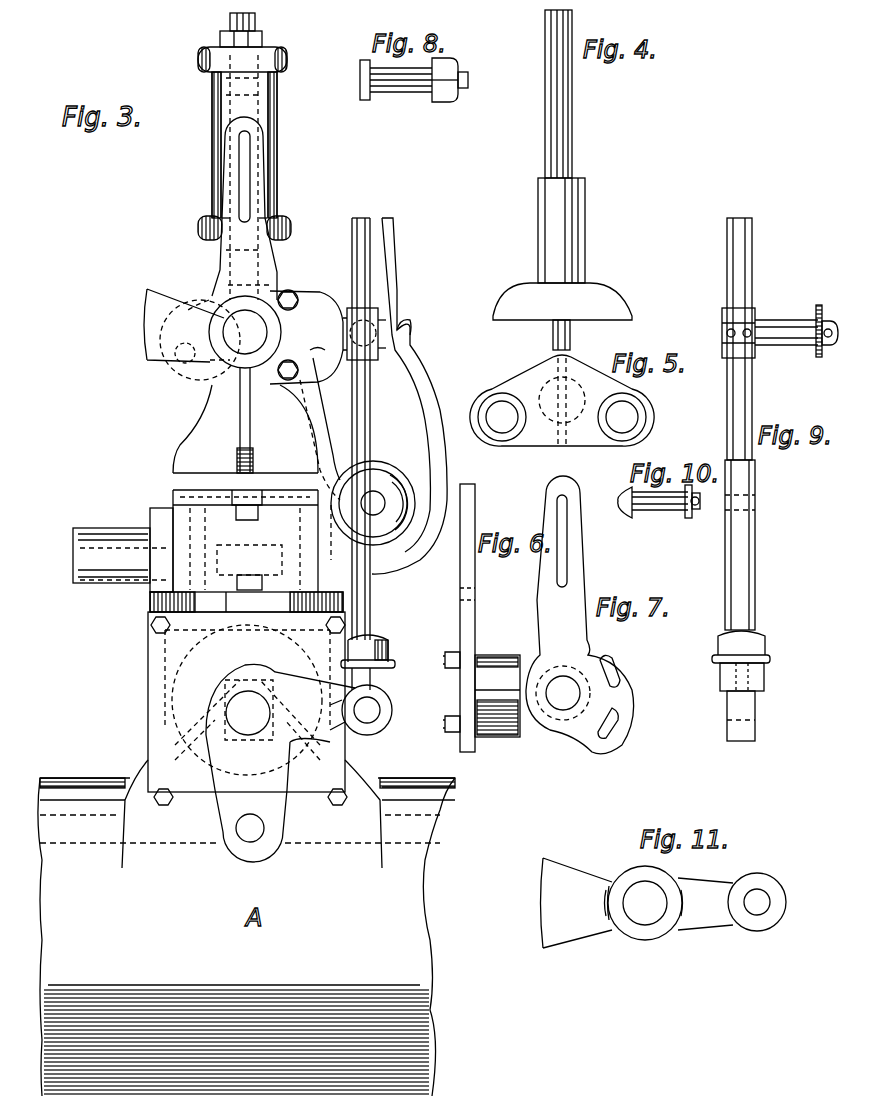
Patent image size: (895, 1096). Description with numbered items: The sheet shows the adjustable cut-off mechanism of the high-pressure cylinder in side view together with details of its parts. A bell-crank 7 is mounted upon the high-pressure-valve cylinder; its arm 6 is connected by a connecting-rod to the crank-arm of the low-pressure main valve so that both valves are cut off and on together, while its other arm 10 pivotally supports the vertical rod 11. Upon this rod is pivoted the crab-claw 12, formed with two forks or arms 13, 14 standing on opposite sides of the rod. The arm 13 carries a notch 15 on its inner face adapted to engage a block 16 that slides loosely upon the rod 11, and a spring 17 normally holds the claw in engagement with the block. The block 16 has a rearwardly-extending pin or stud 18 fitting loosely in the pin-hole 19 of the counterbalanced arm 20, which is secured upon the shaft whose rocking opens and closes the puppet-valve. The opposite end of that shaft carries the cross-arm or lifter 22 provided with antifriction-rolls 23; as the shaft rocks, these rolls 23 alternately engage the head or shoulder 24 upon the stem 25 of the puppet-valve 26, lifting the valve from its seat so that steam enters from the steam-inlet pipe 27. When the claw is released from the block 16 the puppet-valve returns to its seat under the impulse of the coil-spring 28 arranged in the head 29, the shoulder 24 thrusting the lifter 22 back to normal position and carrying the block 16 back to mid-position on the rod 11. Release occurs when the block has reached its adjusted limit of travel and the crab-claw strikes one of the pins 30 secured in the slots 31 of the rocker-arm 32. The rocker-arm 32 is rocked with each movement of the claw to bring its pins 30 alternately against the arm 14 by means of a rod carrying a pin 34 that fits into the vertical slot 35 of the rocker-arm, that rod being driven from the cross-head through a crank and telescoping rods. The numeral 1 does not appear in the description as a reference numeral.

In FIG. 3, the hub of crank plate 1 is at (243, 345).
In FIG. 3, the arm 6 is at (250, 848).
In FIG. 3, the bell-crank 7 is at (220, 716).
In FIG. 3, the arm 10 is at (366, 736).
In FIG. 3, the vertical rod 11 is at (372, 624).
In FIG. 9, the vertical rod 11 is at (756, 594).
In FIG. 3, the crab-claw 12 is at (386, 495).
In FIG. 3, the arm 13 is at (393, 297).
In FIG. 3, the arm 14 is at (323, 410).
In FIG. 3, the notch 15 is at (400, 330).
In FIG. 3, the block 16 is at (355, 322).
In FIG. 3, the spring 17 is at (436, 378).
In FIG. 9, the pin or stud 18 is at (776, 322).
In FIG. 11, the pin-hole 19 is at (768, 898).
In FIG. 11, the counterbalanced arm 20 is at (627, 876).
In FIG. 3, the cross-arm or lifter 22 is at (200, 384).
In FIG. 5, the cross-arm or lifter 22 is at (527, 380).
In FIG. 5, the antifriction-rolls 23 is at (640, 417).
In FIG. 3, the head or shoulder 24 is at (211, 291).
In FIG. 4, the head or shoulder 24 is at (613, 302).
In FIG. 4, the stem 25 is at (573, 141).
In FIG. 3, the puppet-valve 26 is at (240, 570).
In FIG. 3, the steam-inlet pipe 27 is at (103, 540).
In FIG. 3, the coil-spring 28 is at (254, 110).
In FIG. 3, the head 29 is at (272, 198).
In FIG. 6, the pins 30 is at (498, 658).
In FIG. 7, the slots 31 is at (618, 672).
In FIG. 7, the rocker-arm 32 is at (575, 628).
In FIG. 8, the pin 34 is at (400, 88).
In FIG. 3, the vertical slot 35 is at (240, 183).
In FIG. 7, the vertical slot 35 is at (568, 540).